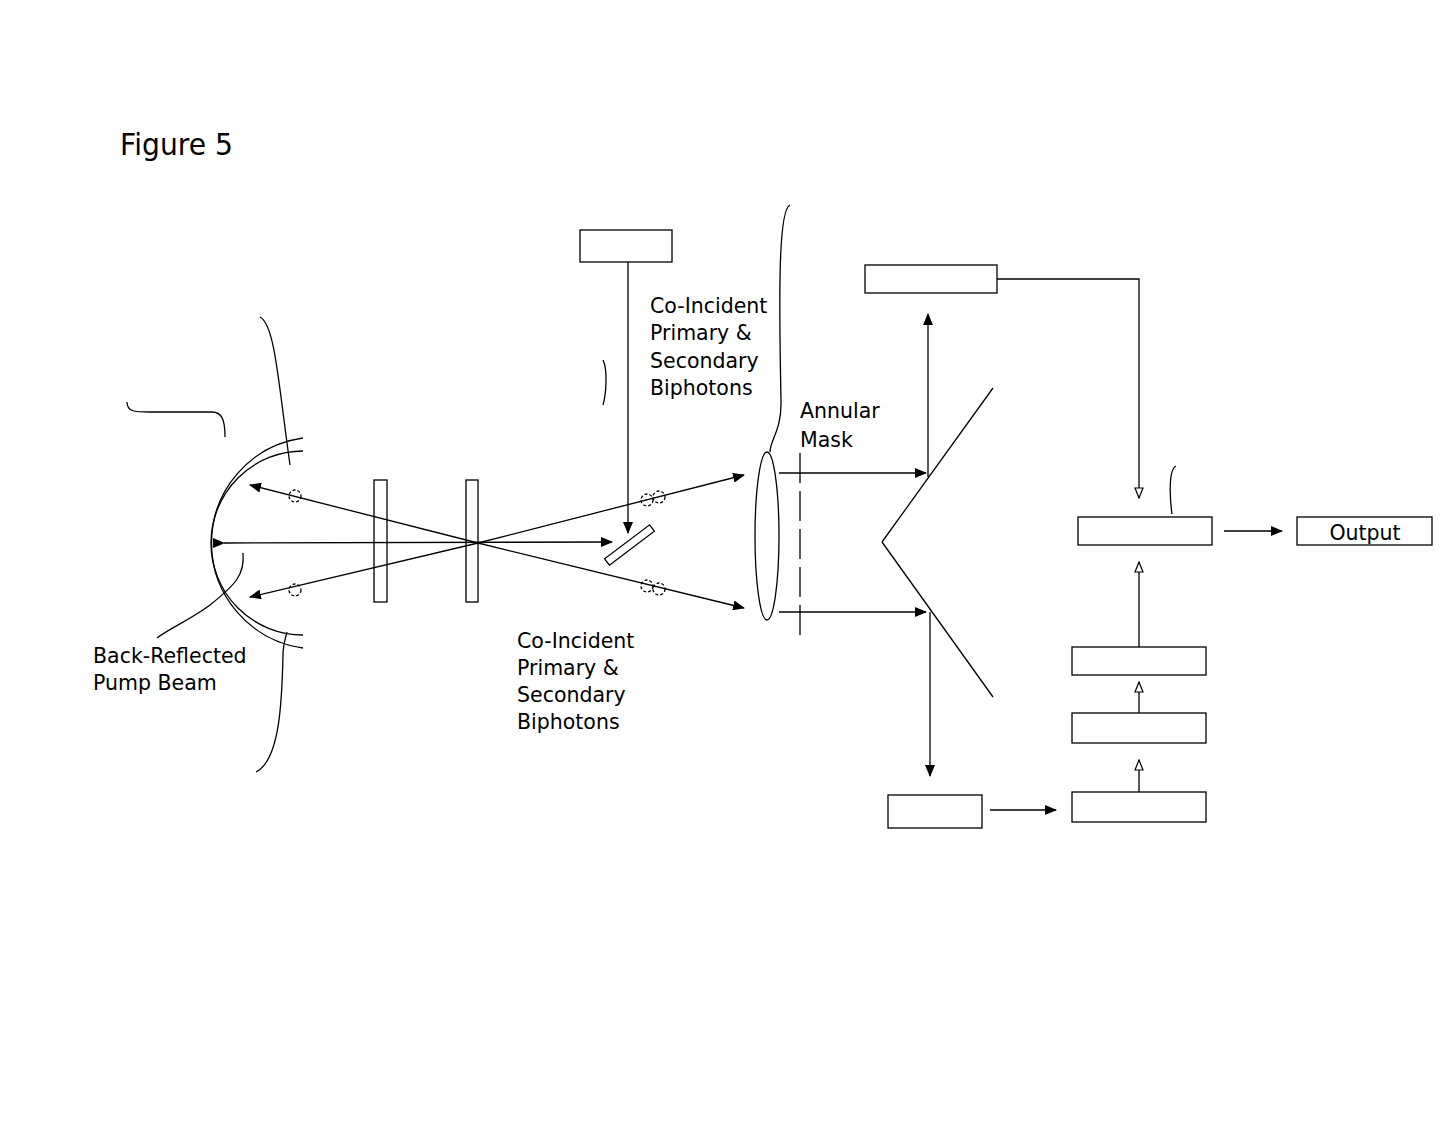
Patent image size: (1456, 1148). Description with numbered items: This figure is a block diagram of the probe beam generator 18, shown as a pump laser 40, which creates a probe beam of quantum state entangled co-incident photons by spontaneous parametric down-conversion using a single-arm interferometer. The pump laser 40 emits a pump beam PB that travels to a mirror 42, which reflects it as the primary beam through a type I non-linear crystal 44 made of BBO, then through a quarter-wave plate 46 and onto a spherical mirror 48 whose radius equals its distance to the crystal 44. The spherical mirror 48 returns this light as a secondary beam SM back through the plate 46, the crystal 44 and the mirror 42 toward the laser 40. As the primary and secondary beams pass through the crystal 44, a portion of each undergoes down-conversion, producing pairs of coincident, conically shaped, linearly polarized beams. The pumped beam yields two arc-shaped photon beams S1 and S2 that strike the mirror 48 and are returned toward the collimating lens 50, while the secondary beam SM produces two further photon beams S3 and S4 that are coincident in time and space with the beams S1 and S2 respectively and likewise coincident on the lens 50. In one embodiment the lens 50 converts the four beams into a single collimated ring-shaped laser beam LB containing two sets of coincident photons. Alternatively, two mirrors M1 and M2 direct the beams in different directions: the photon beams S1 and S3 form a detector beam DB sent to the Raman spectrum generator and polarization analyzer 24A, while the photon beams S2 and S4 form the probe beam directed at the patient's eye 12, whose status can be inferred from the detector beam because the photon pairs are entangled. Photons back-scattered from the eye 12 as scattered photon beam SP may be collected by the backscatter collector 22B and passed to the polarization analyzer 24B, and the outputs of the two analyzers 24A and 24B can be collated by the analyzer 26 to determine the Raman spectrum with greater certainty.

The spherical mirror 48 is at (205, 499).
The quarter-wave plate 46 is at (375, 347).
The non-linear crystal 44 is at (473, 503).
The pump laser 40 is at (626, 231).
The mirror 42 is at (668, 548).
The collimating lens 50 is at (831, 401).
The Raman spectrum generator and polarization analyzer 24A is at (1017, 253).
The analyzer 26 is at (1196, 493).
The polarization analyzer 24B is at (1255, 661).
The backscatter collector 22B is at (1256, 728).
The eye 12 is at (1139, 823).
The probe beam generator 18 is at (803, 765).
The secondary beam SM is at (418, 531).
The pump beam PB is at (583, 397).
The detector beam DB is at (987, 395).
The laser beam LB is at (828, 660).
The scattered photon beam SP is at (1273, 775).
The mirror M1 is at (970, 465).
The mirror M2 is at (971, 619).
The photon beam S1 is at (222, 693).
The photon beam S2 is at (222, 396).
The photon beam S3 is at (660, 490).
The photon beam S4 is at (661, 596).